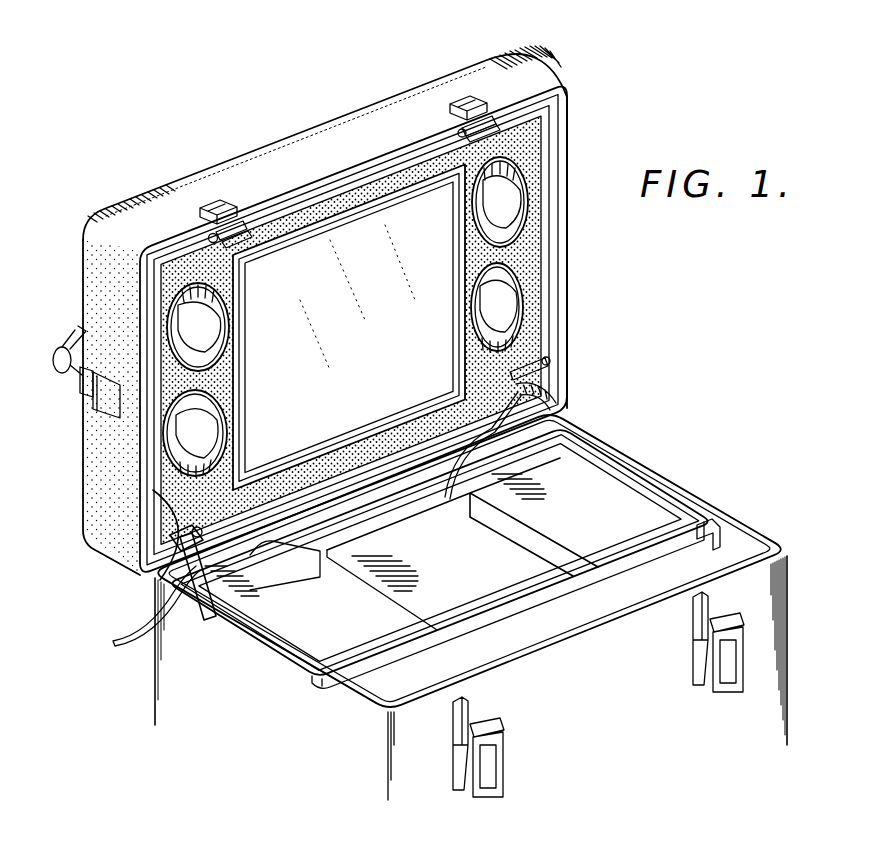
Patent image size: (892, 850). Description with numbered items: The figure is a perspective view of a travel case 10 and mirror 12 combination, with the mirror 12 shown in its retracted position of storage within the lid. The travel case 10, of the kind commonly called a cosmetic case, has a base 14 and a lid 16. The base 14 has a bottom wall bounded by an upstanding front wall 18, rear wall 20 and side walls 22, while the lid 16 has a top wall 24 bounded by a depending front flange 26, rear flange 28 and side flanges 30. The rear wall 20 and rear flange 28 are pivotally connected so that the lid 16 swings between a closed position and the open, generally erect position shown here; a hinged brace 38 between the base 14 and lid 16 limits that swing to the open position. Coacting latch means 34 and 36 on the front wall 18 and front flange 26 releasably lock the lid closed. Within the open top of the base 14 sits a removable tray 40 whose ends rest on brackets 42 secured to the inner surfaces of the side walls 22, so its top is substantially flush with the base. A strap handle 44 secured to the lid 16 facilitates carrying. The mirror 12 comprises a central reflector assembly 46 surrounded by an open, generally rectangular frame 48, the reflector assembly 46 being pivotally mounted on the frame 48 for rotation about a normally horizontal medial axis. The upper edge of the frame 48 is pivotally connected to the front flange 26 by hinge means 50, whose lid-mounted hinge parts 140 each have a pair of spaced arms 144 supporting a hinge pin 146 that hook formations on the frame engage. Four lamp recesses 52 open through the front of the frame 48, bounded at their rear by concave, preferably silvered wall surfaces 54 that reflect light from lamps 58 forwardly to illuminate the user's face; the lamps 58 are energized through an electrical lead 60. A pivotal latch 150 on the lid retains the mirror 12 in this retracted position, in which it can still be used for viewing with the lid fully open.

The travel case 10 is at (135, 712).
The mirror 12 is at (569, 268).
The base 14 is at (162, 675).
The lid 16 is at (551, 67).
The front wall 18 is at (695, 650).
The rear wall 20 is at (185, 565).
The side walls 22 is at (745, 483).
The top wall 24 is at (330, 118).
The front flange 26 is at (370, 120).
The rear flange 28 is at (155, 556).
The side flanges 30 is at (570, 128).
The latch means 34 is at (700, 625).
The latch means 36 is at (470, 95).
The hinged brace 38 is at (150, 483).
The removable tray 40 is at (597, 492).
The brackets 42 is at (714, 537).
The strap handle 44 is at (68, 348).
The reflector assembly 46 is at (363, 402).
The frame 48 is at (348, 456).
The hinge means 50 is at (463, 133).
The lamp recesses 52 is at (513, 305).
The wall surfaces 54 is at (511, 213).
The lamp 58 is at (490, 205).
The electrical lead 60 is at (118, 630).
The hinge parts 140 is at (490, 120).
The arms 144 is at (249, 240).
The hinge pin 146 is at (212, 242).
The pivotal latch 150 is at (528, 381).